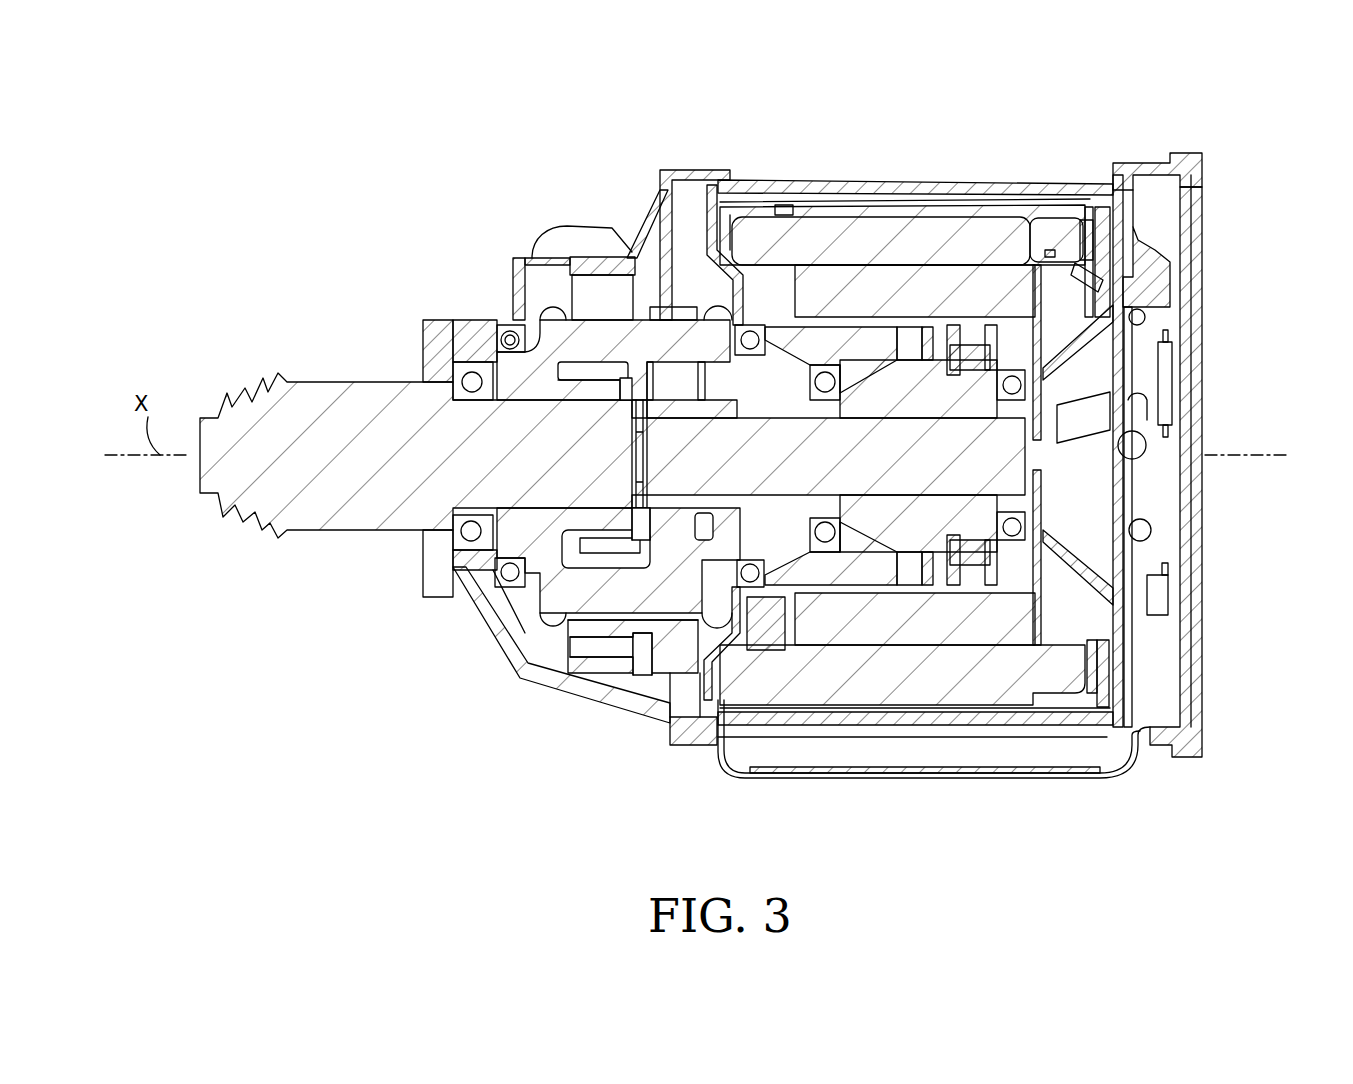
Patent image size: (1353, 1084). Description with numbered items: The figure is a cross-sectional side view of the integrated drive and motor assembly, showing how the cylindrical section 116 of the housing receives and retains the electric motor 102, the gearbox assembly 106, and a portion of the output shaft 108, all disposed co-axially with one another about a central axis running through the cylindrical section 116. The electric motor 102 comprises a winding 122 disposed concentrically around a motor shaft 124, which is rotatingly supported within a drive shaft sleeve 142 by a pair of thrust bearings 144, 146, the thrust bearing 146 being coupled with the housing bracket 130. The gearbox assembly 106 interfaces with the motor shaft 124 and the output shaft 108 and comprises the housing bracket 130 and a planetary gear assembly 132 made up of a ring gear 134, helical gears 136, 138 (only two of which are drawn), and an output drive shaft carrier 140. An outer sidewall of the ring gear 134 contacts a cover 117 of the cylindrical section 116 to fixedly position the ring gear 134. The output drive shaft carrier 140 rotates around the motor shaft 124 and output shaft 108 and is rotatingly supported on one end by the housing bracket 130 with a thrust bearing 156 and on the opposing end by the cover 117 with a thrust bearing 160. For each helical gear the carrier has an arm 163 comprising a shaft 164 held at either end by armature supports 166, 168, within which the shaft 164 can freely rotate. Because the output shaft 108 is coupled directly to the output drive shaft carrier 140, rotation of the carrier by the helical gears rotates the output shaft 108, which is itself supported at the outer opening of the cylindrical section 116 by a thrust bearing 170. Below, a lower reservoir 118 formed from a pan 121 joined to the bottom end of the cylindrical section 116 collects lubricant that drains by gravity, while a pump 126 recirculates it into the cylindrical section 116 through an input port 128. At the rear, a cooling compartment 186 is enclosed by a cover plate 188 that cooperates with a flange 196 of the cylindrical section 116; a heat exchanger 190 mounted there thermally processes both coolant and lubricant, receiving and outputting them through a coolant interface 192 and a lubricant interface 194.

The electric motor 102 is at (953, 153).
The gearbox assembly 106 is at (572, 198).
The output shaft 108 is at (357, 352).
The cylindrical section 116 is at (1098, 98).
The cover 117 is at (455, 612).
The lower reservoir 118 is at (1058, 806).
The pan 121 is at (1135, 772).
The winding 122 is at (1020, 265).
The motor shaft 124 is at (940, 395).
The pump 126 is at (1168, 595).
The input port 128 is at (1175, 277).
The housing bracket 130 is at (740, 200).
The planetary gear assembly 132 is at (518, 627).
The ring gear 134 is at (603, 275).
The helical gear 136 is at (690, 300).
The helical gear 138 is at (665, 660).
The output drive shaft carrier 140 is at (555, 330).
The drive shaft sleeve 142 is at (862, 345).
The thrust bearing 144 is at (1020, 527).
The thrust bearing 146 is at (820, 535).
The thrust bearing 156 is at (755, 335).
The thrust bearing 160 is at (510, 330).
The arm 163 is at (572, 600).
The shaft 164 is at (612, 595).
The armature support 166 is at (710, 625).
The armature support 168 is at (540, 630).
The thrust bearing 170 is at (470, 533).
The cooling compartment 186 is at (1155, 665).
The cover plate 188 is at (1195, 195).
The heat exchanger 190 is at (1175, 385).
The coolant interface 192 is at (1170, 337).
The lubricant interface 194 is at (1172, 427).
The flange 196 is at (1130, 165).